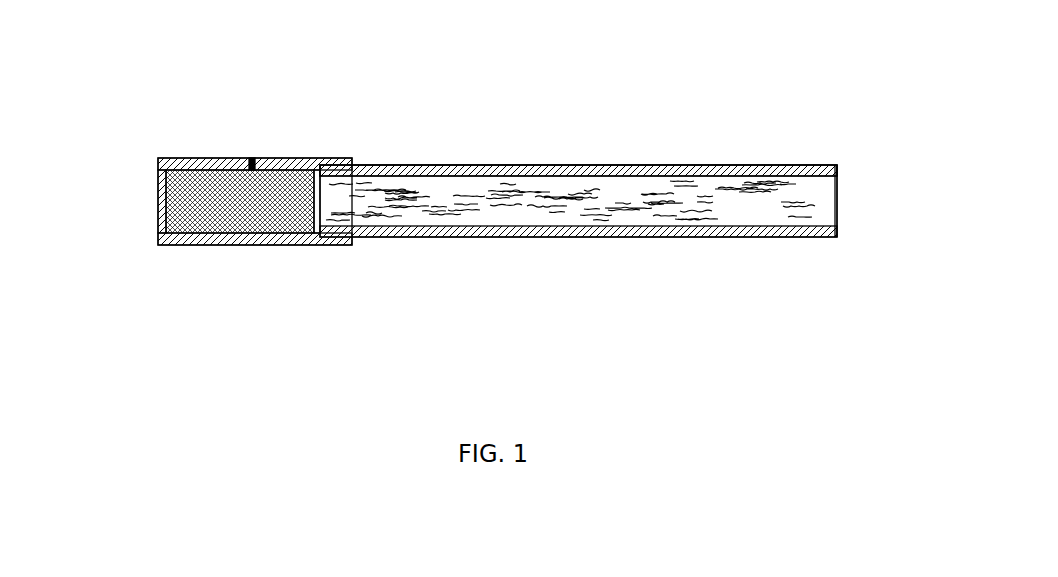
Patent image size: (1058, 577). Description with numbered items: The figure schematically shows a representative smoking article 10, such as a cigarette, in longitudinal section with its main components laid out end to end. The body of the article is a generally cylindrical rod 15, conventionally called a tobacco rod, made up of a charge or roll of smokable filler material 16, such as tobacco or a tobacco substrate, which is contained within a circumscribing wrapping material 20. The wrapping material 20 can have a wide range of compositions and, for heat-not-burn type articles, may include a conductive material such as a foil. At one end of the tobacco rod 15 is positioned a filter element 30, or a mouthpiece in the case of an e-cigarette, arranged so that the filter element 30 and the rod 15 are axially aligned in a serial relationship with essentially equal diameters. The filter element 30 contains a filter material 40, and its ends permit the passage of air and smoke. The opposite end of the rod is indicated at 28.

The smoking article 10 is at (502, 170).
The rod 15 is at (800, 165).
The smokable filler material 16 is at (752, 210).
The wrapping material 20 is at (688, 237).
The lighting end 28 is at (842, 212).
The filter element 30 is at (158, 165).
The filter material 40 is at (165, 245).